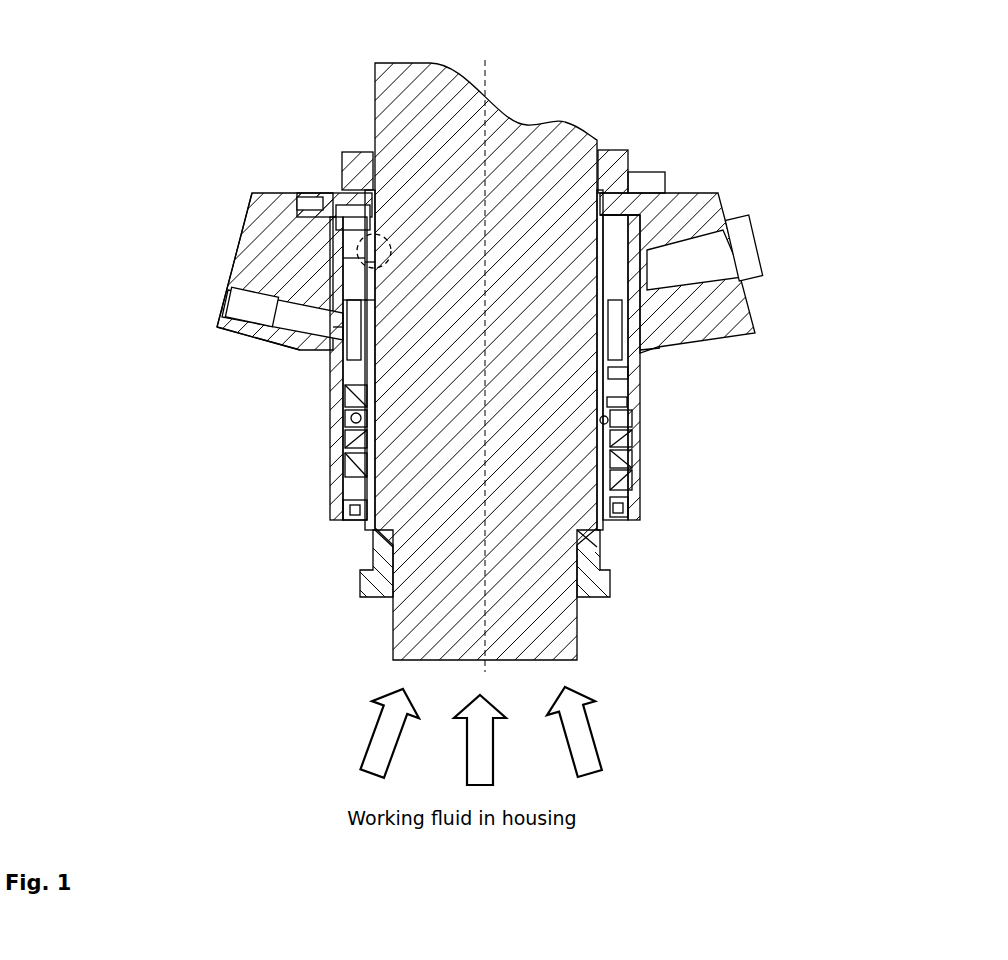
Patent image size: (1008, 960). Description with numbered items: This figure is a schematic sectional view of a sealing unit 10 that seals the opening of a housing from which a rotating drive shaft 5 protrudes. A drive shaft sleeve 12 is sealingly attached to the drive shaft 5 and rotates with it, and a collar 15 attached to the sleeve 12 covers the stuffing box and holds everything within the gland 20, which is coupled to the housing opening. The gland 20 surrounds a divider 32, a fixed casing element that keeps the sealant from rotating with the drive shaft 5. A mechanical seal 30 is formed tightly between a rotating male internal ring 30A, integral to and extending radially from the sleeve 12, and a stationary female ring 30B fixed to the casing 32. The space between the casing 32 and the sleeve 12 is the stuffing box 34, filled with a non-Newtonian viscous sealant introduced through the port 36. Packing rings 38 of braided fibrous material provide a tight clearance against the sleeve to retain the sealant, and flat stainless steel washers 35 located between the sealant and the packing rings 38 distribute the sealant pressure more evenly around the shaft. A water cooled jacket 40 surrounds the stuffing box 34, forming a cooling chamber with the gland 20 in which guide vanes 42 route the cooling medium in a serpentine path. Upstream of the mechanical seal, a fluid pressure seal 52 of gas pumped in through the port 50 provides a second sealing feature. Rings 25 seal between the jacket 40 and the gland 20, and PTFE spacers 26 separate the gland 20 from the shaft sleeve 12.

The drive shaft 5 is at (530, 123).
The sealing unit 10 is at (832, 233).
The drive shaft sleeve 12 is at (372, 157).
The collar 15 is at (620, 150).
The gland 20 is at (340, 280).
The rings 25 is at (332, 327).
The PTFE spacers 26 is at (347, 505).
The mechanical seal 30 is at (382, 247).
The rotating male internal ring 30A is at (382, 258).
The external stationary female ring 30B is at (345, 258).
The divider 32 is at (640, 202).
The stuffing box 34 is at (373, 300).
The washers 35 is at (620, 224).
The port 36 is at (713, 257).
The packing rings 38 is at (363, 215).
The water cooled jacket 40 is at (238, 242).
The guide vanes 42 is at (340, 288).
The port 50 is at (223, 300).
The fluid pressure seal 52 is at (347, 418).